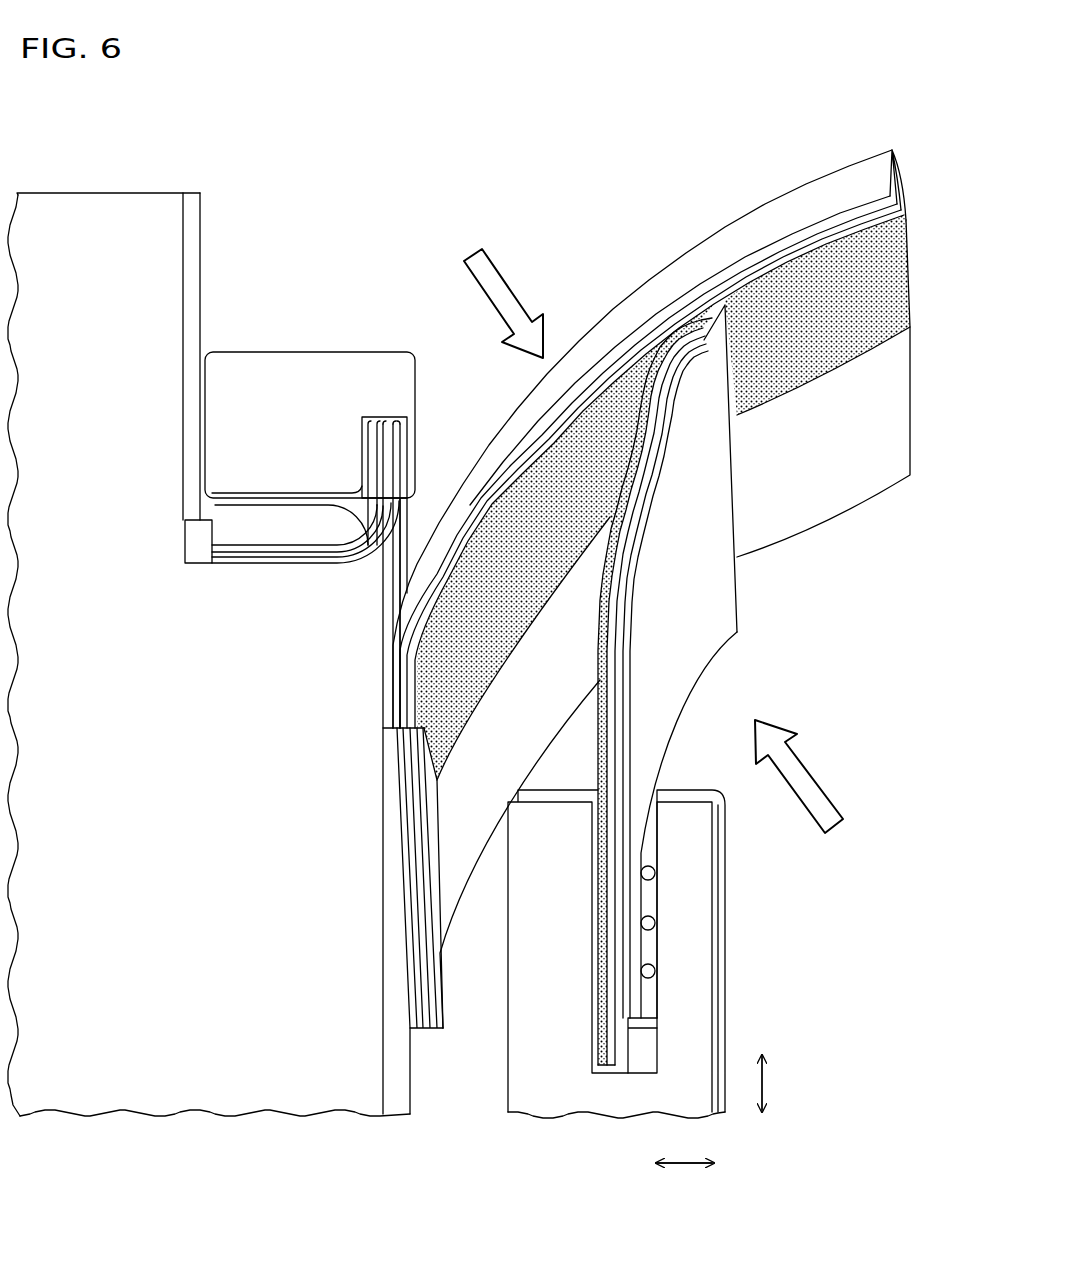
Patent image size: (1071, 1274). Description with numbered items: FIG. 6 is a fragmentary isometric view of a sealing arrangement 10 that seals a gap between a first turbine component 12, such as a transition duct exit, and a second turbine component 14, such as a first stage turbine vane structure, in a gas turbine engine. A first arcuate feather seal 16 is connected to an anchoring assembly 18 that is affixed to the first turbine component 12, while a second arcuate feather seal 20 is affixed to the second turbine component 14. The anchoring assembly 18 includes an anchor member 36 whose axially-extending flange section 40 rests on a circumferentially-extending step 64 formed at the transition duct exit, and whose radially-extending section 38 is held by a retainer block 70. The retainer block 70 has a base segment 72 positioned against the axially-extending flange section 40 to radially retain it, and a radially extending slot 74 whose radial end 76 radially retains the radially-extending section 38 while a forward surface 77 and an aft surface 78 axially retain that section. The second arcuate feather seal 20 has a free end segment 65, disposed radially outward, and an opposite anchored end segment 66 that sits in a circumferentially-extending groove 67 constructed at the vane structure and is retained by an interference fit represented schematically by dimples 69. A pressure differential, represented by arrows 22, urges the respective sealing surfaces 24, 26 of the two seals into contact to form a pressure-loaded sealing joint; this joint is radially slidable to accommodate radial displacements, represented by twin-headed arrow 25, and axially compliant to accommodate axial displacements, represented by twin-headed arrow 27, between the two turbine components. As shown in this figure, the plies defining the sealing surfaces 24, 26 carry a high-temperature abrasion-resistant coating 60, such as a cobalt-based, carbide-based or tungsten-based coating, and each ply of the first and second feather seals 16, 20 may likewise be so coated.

The sealing arrangement 10 is at (372, 145).
The first turbine component 12 is at (103, 212).
The second turbine component 14 is at (690, 988).
The first arcuate feather seal 16 is at (843, 470).
The anchoring assembly 18 is at (316, 578).
The second arcuate feather seal 20 is at (703, 597).
The arrows 22 is at (503, 279).
The sealing surface 24 is at (512, 575).
The twin-headed arrow 25 is at (772, 1085).
The sealing surface 26 is at (600, 750).
The twin-headed arrow 27 is at (684, 1166).
The anchor member 36 is at (250, 578).
The radially-extending section 38 is at (372, 476).
The axially-extending flange section 40 is at (262, 527).
The high-temperature abrasion-resistant coating 60 is at (828, 326).
The circumferentially-extending step 64 is at (194, 544).
The free end segment 65 is at (704, 425).
The anchored end segment 66 is at (614, 998).
The circumferentially-extending groove 67 is at (658, 795).
The dimples 69 is at (651, 971).
The retainer block 70 is at (250, 378).
The base segment 72 is at (278, 497).
The radially extending slot 74 is at (366, 430).
The radial end 76 is at (380, 417).
The forward surface 77 is at (422, 463).
The aft surface 78 is at (407, 458).